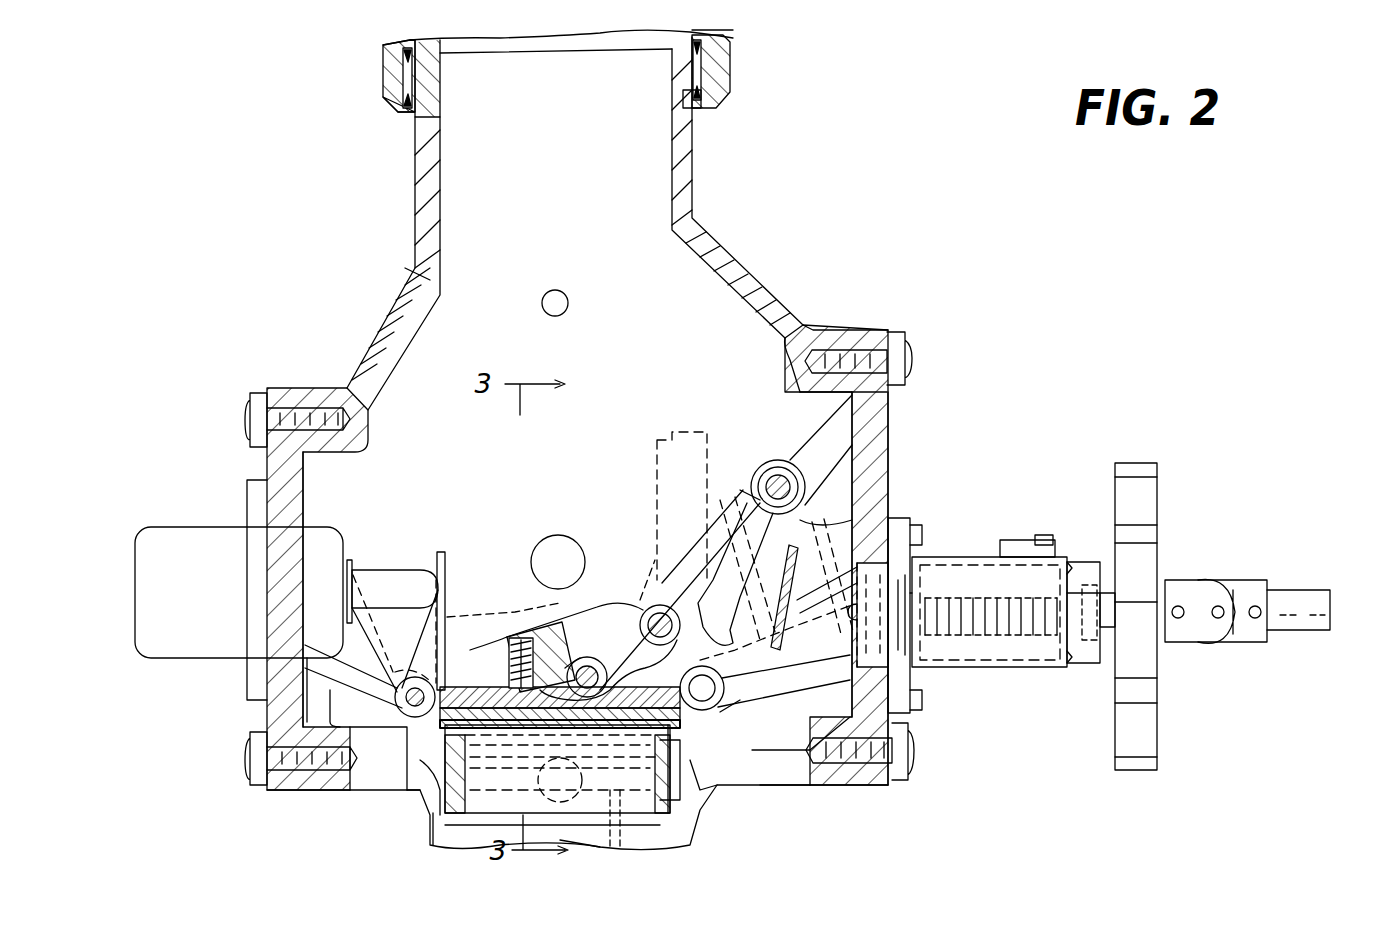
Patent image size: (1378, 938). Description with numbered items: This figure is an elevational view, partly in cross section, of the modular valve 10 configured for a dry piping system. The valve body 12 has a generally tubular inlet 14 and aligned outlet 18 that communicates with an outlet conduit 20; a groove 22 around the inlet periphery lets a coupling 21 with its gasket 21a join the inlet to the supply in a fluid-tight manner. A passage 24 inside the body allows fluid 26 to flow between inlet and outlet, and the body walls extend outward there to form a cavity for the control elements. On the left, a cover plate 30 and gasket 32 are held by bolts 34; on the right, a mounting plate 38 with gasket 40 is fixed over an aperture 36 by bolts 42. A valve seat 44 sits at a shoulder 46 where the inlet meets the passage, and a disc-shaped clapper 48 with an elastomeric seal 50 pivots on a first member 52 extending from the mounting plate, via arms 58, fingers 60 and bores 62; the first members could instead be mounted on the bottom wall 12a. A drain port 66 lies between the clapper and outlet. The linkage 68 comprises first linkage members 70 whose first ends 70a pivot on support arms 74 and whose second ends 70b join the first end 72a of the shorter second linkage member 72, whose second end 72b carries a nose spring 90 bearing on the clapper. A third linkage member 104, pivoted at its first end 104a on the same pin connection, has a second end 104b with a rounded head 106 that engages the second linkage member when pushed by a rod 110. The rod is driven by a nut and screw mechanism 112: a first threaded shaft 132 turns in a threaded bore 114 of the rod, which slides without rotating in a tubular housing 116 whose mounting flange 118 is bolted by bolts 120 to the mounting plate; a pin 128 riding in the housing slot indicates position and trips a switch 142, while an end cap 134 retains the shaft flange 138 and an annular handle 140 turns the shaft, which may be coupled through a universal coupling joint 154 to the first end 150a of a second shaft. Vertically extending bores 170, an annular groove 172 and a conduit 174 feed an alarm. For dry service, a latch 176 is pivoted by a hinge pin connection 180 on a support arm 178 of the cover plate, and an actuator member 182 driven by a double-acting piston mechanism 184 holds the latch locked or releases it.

The valve 10 is at (850, 188).
The valve body 12 is at (745, 280).
The bottom wall 12a is at (812, 790).
The inlet 14 is at (660, 782).
The outlet 18 is at (694, 152).
The outlet conduit 20 is at (733, 32).
The coupling 21 is at (718, 70).
The gasket 21a is at (398, 75).
The groove 22 is at (702, 108).
The passage 24 is at (430, 300).
The fluid 26 is at (450, 847).
The cover plate 30 is at (278, 683).
The gasket 32 is at (306, 792).
The bolts 34 is at (258, 395).
The aperture 36 is at (872, 400).
The mounting plate 38 is at (893, 335).
The gasket 40 is at (858, 330).
The bolts 42 is at (907, 340).
The valve seat 44 is at (443, 815).
The shoulder 46 is at (790, 788).
The clapper 48 is at (545, 780).
The seal 50 is at (418, 720).
The first member 52 is at (782, 690).
The arms 58 is at (497, 650).
The finger 60 is at (606, 686).
The bore 62 is at (655, 748).
The drain port 66 is at (560, 535).
The linkage 68 is at (580, 436).
The first linkage member 70 is at (680, 560).
The first end of first linkage member 70a is at (745, 480).
The second end of first linkage member 70b is at (640, 560).
The second linkage member 72 is at (638, 600).
The first end of second linkage member 72a is at (630, 575).
The second end of second linkage member 72b is at (592, 665).
The support arms 74 is at (845, 432).
The nose spring 90 is at (530, 598).
The third linkage member 104 is at (772, 632).
The first end of third linkage member 104a is at (778, 460).
The second end of third linkage member 104b is at (748, 735).
The rounded head 106 is at (706, 710).
The rod 110 is at (900, 620).
The nut and screw mechanism 112 is at (1002, 500).
The threaded bore 114 is at (985, 637).
The tubular housing 116 is at (940, 660).
The mounting flange 118 is at (895, 770).
The bolts 120 is at (917, 705).
The pin 128 is at (1045, 535).
The first threaded shaft 132 is at (1108, 635).
The end cap 134 is at (1072, 668).
The flange 138 is at (1095, 590).
The annular handle 140 is at (1140, 503).
The switch 142 is at (1003, 540).
The first end of second threaded shaft 150a is at (1300, 600).
The universal coupling joint 154 is at (1190, 642).
The vertically extending bores 170 is at (700, 790).
The annular groove 172 is at (420, 792).
The conduit 174 is at (600, 845).
The latch 176 is at (440, 550).
The support arm 178 is at (362, 604).
The hinge pin connection 180 is at (387, 662).
The actuator member 182 is at (372, 578).
The double-acting piston mechanism 184 is at (185, 527).